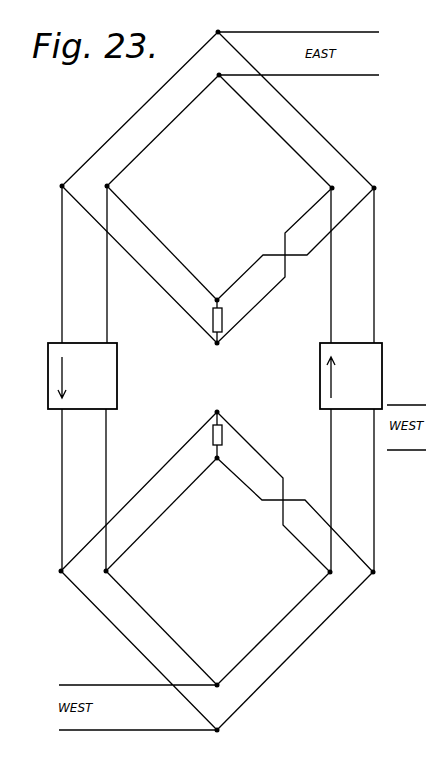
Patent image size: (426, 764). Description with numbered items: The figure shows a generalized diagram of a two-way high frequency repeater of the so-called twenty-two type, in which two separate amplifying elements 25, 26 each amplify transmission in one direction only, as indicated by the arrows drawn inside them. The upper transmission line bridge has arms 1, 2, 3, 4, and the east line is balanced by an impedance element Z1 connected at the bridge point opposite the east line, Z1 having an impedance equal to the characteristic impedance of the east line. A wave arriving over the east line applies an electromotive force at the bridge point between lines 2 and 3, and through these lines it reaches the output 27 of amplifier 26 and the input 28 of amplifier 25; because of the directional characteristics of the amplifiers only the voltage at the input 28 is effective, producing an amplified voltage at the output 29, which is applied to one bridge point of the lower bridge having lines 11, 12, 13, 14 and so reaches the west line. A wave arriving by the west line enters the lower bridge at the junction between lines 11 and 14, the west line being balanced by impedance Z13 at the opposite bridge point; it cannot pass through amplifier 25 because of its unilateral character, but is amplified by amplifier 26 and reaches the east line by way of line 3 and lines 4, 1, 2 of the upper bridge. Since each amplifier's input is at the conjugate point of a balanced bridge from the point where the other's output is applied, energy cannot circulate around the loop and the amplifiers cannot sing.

The bridge arm 1 is at (162, 243).
The bridge arm 2 is at (163, 130).
The bridge arm 3 is at (275, 131).
The bridge arm 4 is at (295, 244).
The bridge line 11 is at (161, 628).
The bridge line 12 is at (161, 514).
The bridge line 13 is at (295, 515).
The bridge line 14 is at (295, 651).
The amplifying element 25 is at (117, 378).
The amplifying element 26 is at (320, 385).
The amplifier output 27 is at (375, 300).
The amplifier input 28 is at (62, 305).
The amplifier output 29 is at (62, 480).
The impedance element Z1 is at (222, 320).
The impedance element Z13 is at (222, 435).